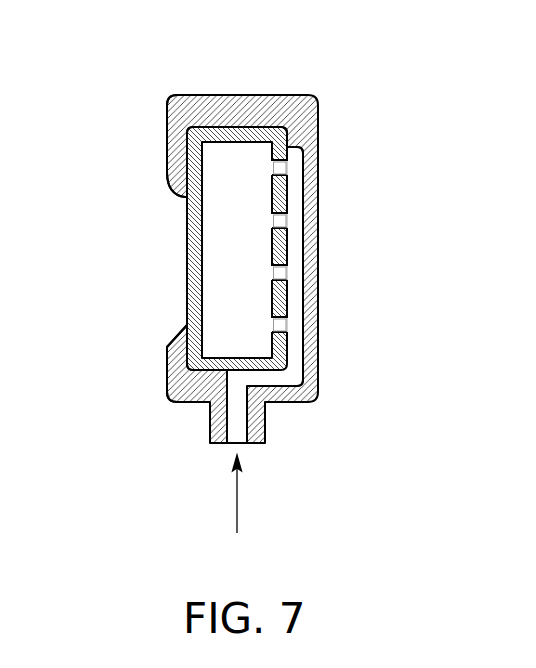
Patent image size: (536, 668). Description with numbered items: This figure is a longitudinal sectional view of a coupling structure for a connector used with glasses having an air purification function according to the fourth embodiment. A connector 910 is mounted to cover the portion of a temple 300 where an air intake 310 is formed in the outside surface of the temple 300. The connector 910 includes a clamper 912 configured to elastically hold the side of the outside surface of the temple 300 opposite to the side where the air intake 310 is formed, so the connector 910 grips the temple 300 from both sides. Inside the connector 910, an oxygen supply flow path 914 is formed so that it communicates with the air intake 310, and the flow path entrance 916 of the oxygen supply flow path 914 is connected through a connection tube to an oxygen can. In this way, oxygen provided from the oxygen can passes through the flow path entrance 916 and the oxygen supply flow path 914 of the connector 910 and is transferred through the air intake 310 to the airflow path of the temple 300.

The temple 300 is at (238, 127).
The air intake 310 is at (279, 221).
The connector 910 is at (320, 135).
The clamper 912 is at (174, 168).
The oxygen supply flow path 914 is at (292, 311).
The flow path entrance 916 is at (238, 430).